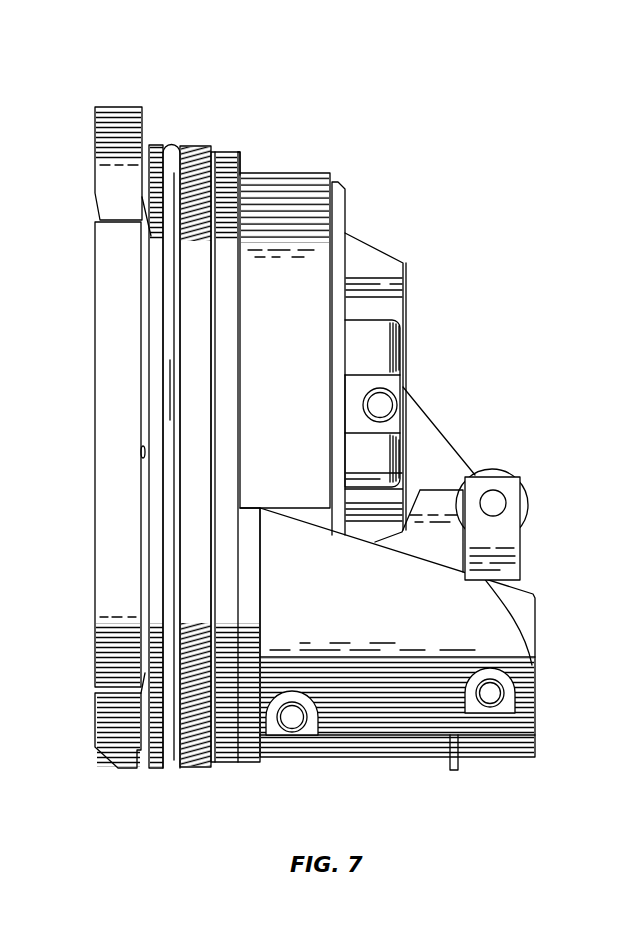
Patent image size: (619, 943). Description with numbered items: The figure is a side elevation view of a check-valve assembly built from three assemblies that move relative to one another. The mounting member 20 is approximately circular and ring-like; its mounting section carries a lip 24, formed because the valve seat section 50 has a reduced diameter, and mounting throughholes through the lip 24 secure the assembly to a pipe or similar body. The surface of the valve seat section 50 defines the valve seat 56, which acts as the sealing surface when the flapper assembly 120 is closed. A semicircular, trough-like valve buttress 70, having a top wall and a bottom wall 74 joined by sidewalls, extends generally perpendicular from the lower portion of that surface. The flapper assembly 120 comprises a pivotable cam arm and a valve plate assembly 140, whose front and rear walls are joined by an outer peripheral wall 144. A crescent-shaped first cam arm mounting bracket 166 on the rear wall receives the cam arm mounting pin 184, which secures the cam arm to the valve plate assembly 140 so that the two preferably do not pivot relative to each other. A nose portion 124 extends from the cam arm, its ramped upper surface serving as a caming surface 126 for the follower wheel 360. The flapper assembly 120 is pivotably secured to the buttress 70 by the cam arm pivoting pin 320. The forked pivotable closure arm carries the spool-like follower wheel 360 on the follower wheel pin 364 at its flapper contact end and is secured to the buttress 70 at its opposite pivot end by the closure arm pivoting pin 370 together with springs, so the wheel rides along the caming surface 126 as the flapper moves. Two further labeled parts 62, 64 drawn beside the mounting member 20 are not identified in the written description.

The mounting member 20 is at (113, 128).
The lip 24 is at (108, 578).
The valve seat section 50 is at (225, 167).
The valve seat 56 is at (247, 157).
The blade 62 is at (172, 145).
The blade holder strip 64 is at (170, 760).
The valve buttress 70 is at (428, 662).
The bottom wall 74 is at (430, 737).
The flapper assembly 120 is at (411, 338).
The nose portion 124 is at (445, 448).
The caming surface 126 is at (403, 338).
The valve plate assembly 140 is at (320, 322).
The outer peripheral wall 144 is at (318, 218).
The first cam arm mounting bracket 166 is at (418, 338).
The cam arm mounting pin 184 is at (383, 407).
The cam arm pivoting pin 320 is at (292, 727).
The follower wheel 360 is at (525, 503).
The follower wheel pin 364 is at (498, 502).
The closure arm pivoting pin 370 is at (497, 697).